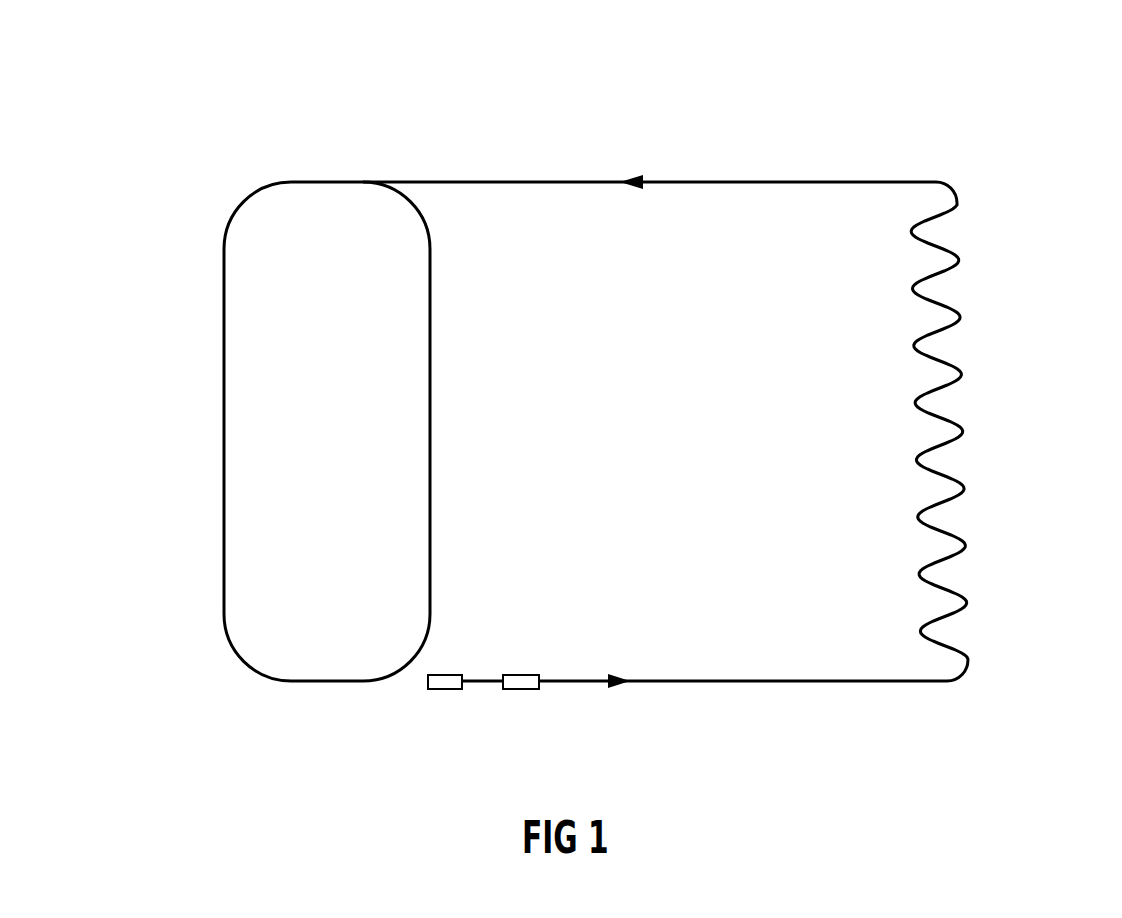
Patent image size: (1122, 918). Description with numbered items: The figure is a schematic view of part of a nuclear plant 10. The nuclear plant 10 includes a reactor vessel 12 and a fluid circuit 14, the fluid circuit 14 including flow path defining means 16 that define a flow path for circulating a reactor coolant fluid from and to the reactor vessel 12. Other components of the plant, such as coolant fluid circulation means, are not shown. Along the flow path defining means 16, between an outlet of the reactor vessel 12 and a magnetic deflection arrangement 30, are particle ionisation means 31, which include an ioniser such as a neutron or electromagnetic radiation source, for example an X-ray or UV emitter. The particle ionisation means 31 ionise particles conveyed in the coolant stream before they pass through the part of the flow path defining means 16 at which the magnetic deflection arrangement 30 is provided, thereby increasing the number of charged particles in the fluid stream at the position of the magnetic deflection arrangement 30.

The nuclear plant 10 is at (120, 127).
The reactor vessel 12 is at (431, 377).
The fluid circuit 14 is at (978, 402).
The flow path defining means 16 is at (483, 684).
The magnetic deflection arrangement 30 is at (525, 676).
The particle ionisation means 31 is at (444, 676).